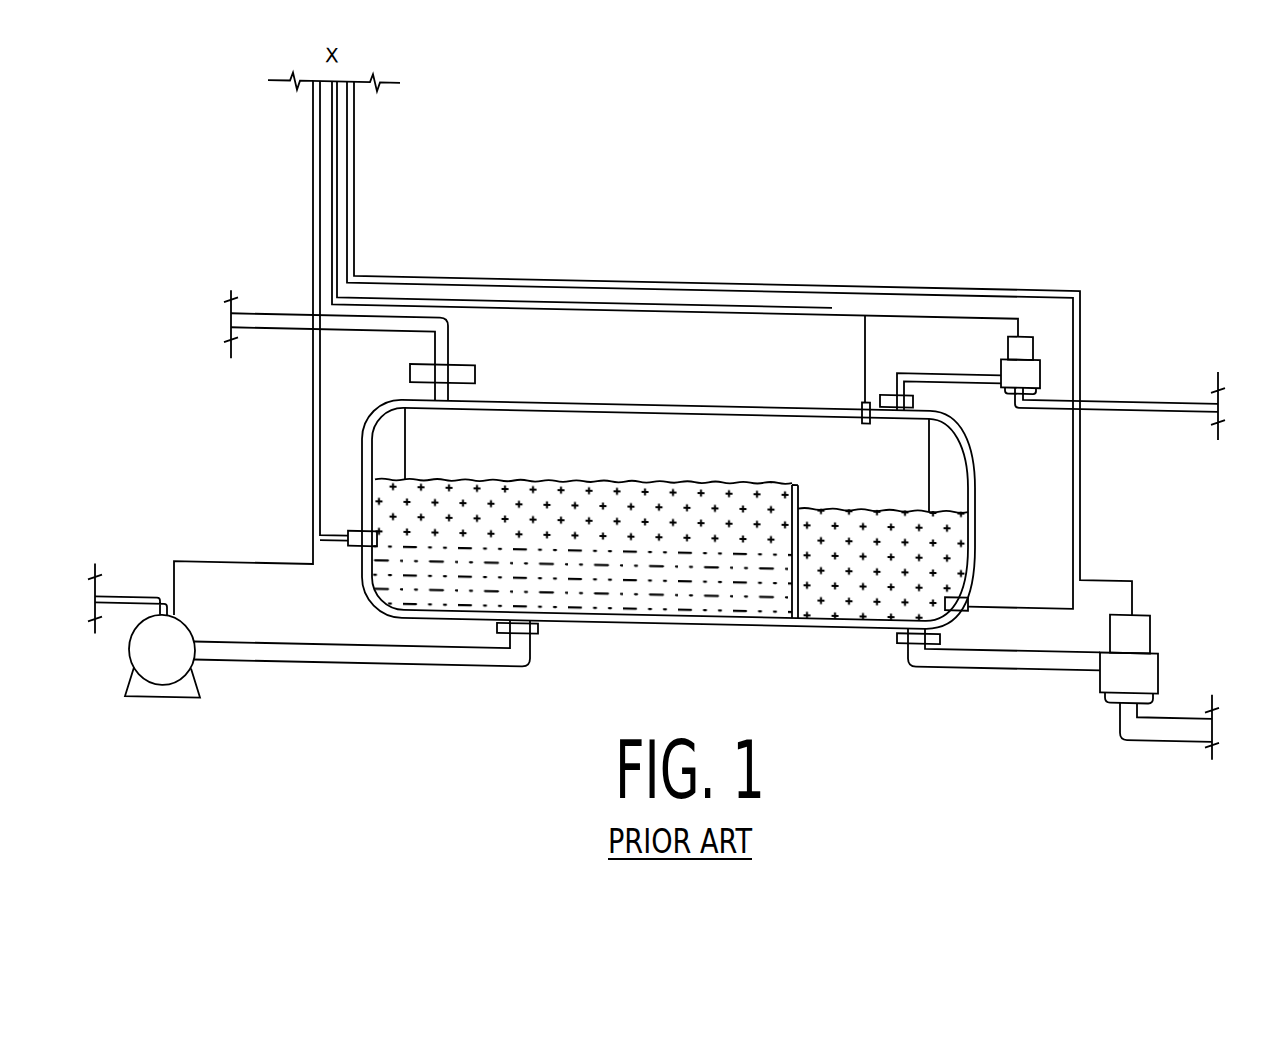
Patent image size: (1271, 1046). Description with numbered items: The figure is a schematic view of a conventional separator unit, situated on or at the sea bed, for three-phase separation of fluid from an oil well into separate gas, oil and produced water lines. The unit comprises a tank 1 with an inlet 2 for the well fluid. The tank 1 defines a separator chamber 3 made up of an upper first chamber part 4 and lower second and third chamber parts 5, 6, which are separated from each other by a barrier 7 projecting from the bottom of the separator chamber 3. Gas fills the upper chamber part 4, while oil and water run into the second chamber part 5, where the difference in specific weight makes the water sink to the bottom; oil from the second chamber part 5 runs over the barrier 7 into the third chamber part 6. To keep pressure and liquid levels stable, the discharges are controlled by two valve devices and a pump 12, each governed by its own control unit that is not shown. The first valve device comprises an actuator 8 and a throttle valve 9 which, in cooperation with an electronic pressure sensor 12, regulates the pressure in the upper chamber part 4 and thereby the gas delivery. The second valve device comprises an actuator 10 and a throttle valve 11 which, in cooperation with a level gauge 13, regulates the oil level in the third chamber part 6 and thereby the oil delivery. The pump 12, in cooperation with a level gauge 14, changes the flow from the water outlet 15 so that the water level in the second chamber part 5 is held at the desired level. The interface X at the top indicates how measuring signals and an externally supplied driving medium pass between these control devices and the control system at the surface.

The tank 1 is at (704, 391).
The inlet 2 is at (450, 395).
The separator chamber 3 is at (649, 471).
The first chamber part 4 is at (593, 427).
The second chamber part 5 is at (623, 566).
The third chamber part 6 is at (872, 584).
The barrier 7 is at (800, 496).
The actuator 8 is at (1033, 338).
The throttle valve 9 is at (1030, 366).
The actuator 10 is at (1140, 621).
The throttle valve 11 is at (1145, 666).
The pump 12 is at (180, 672).
The level gauge 13 is at (970, 585).
The level gauge 14 is at (352, 553).
The water outlet 15 is at (520, 645).